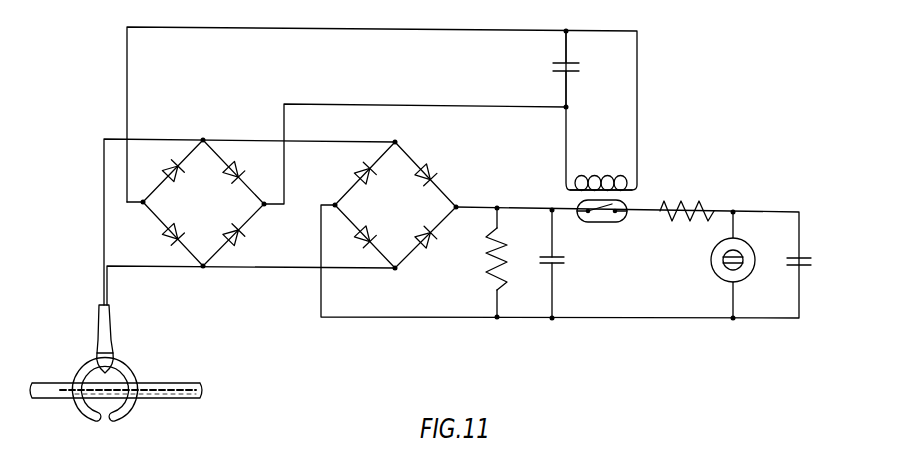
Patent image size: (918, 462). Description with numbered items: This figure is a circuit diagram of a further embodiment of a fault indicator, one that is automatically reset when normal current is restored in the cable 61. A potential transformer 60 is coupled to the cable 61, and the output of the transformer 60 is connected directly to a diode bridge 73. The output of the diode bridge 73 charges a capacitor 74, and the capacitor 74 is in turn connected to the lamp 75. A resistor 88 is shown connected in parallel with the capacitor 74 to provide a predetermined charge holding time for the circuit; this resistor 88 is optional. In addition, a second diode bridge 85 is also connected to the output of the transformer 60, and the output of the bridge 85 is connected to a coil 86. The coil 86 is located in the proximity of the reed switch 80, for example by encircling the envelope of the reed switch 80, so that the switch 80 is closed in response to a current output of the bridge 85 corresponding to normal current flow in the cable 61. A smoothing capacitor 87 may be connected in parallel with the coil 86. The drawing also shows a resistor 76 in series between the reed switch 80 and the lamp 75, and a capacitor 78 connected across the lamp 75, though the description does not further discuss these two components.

The potential transformer 60 is at (128, 367).
The cable 61 is at (180, 400).
The diode bridge 73 is at (408, 217).
The capacitor 74 is at (562, 266).
The lamp 75 is at (713, 269).
The resistor 76 is at (692, 208).
The capacitor 78 is at (808, 253).
The reed switch 80 is at (616, 222).
The second diode bridge 85 is at (217, 216).
The coil 86 is at (638, 190).
The smoothing capacitor 87 is at (577, 63).
The resistor 88 is at (505, 253).